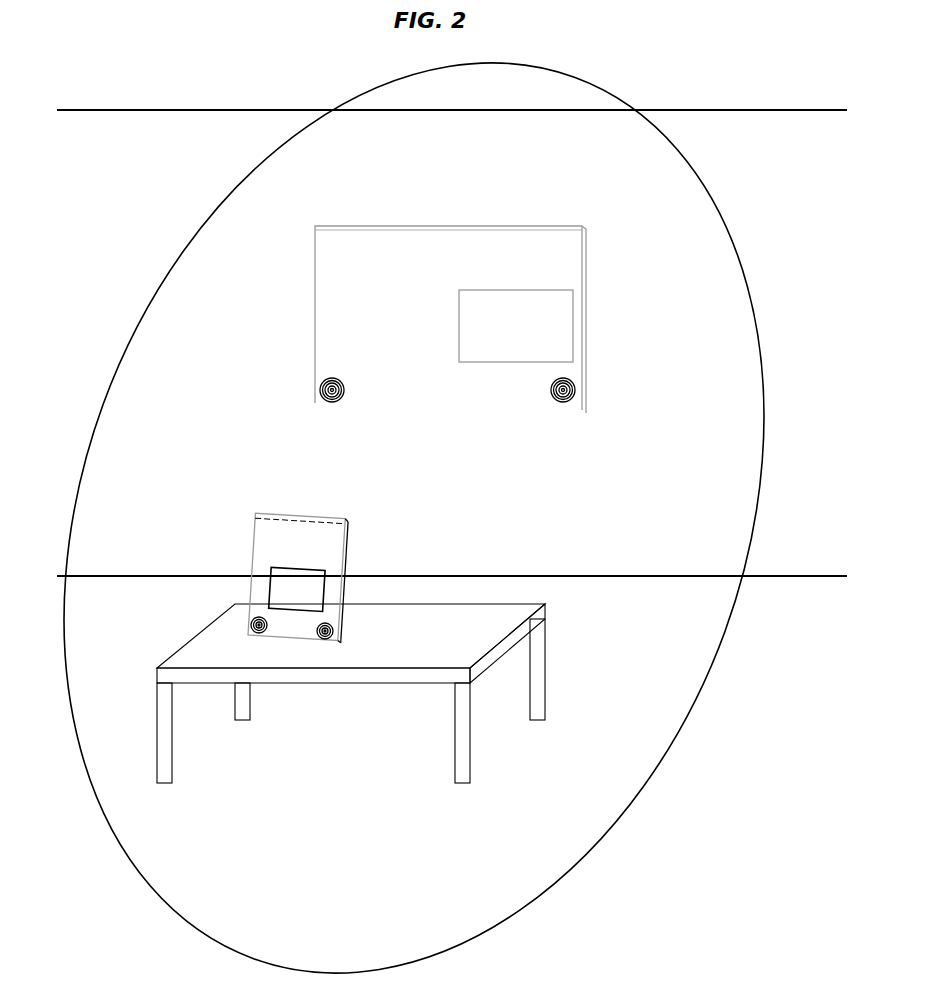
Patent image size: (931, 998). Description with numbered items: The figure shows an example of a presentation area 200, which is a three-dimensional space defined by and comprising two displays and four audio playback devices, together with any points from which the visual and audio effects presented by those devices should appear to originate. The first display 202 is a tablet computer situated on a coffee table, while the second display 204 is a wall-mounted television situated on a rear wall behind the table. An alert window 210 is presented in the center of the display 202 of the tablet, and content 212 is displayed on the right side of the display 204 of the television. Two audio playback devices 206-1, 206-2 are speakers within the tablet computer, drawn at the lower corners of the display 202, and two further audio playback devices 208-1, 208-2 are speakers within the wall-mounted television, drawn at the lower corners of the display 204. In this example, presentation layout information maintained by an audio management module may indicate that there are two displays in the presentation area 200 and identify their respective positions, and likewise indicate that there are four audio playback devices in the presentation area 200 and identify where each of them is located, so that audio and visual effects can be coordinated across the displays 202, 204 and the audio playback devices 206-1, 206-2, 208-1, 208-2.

The presentation area 200 is at (349, 91).
The display 202 is at (298, 577).
The display 204 is at (450, 319).
The audio playback device 206-1 is at (248, 622).
The audio playback device 206-2 is at (337, 633).
The audio playback device 208-1 is at (318, 396).
The audio playback device 208-2 is at (577, 400).
The alert window 210 is at (297, 589).
The content 212 is at (516, 326).